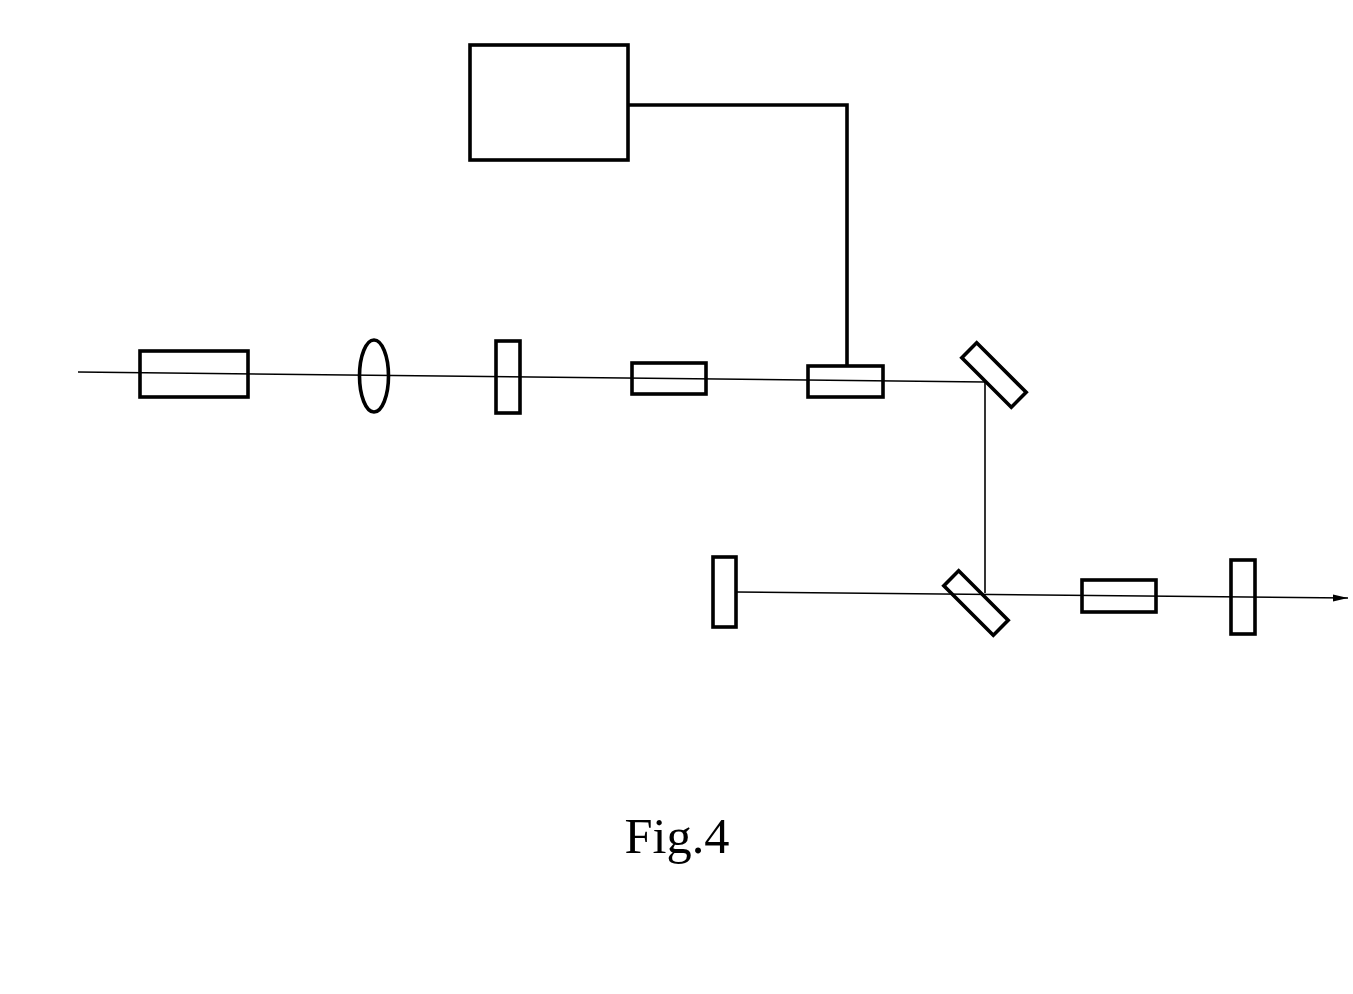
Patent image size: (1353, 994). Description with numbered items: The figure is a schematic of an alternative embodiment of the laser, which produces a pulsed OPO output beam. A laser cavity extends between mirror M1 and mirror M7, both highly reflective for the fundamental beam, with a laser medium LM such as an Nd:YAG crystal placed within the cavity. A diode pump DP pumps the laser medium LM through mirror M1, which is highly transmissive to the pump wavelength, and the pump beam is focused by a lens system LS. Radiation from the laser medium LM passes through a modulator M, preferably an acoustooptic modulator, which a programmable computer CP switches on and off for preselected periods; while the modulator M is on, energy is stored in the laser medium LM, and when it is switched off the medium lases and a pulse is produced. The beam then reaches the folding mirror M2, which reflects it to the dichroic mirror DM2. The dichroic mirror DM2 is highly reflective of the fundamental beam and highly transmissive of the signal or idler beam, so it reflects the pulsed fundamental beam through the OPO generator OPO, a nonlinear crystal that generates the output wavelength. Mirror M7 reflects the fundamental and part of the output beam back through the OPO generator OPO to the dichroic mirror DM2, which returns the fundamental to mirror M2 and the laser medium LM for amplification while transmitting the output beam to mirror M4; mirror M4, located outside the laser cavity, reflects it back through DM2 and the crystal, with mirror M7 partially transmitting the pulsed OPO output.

The computer CP is at (658, 205).
The diode pump DP is at (194, 342).
The lens system LS is at (375, 351).
The mirror M1 is at (512, 353).
The laser medium LM is at (670, 343).
The modulator M is at (845, 408).
The folding mirror M2 is at (1011, 365).
The mirror M4 is at (727, 621).
The dichroic mirror DM2 is at (984, 629).
The OPO generator OPO is at (1122, 635).
The mirror M7 is at (1246, 625).